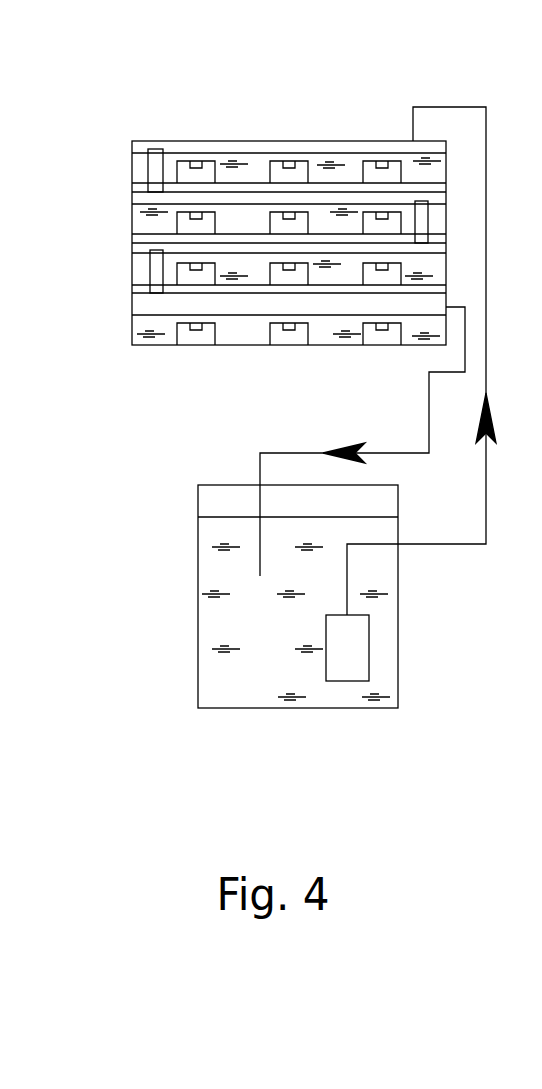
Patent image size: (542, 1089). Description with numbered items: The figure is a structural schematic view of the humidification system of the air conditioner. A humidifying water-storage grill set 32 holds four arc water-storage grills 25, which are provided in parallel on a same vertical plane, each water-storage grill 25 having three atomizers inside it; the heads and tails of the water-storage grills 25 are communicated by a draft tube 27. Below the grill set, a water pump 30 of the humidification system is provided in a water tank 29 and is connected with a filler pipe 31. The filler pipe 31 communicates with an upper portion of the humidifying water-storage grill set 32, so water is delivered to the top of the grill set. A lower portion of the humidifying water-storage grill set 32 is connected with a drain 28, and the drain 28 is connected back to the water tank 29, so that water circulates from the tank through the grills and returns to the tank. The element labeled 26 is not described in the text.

The water-storage grill 25 is at (192, 166).
The cultivation tray 26 is at (212, 148).
The draft tube 27 is at (155, 175).
The drain 28 is at (408, 450).
The water tank 29 is at (223, 500).
The water pump 30 is at (352, 657).
The filler pipe 31 is at (438, 107).
The humidifying water-storage grill set 32 is at (287, 140).